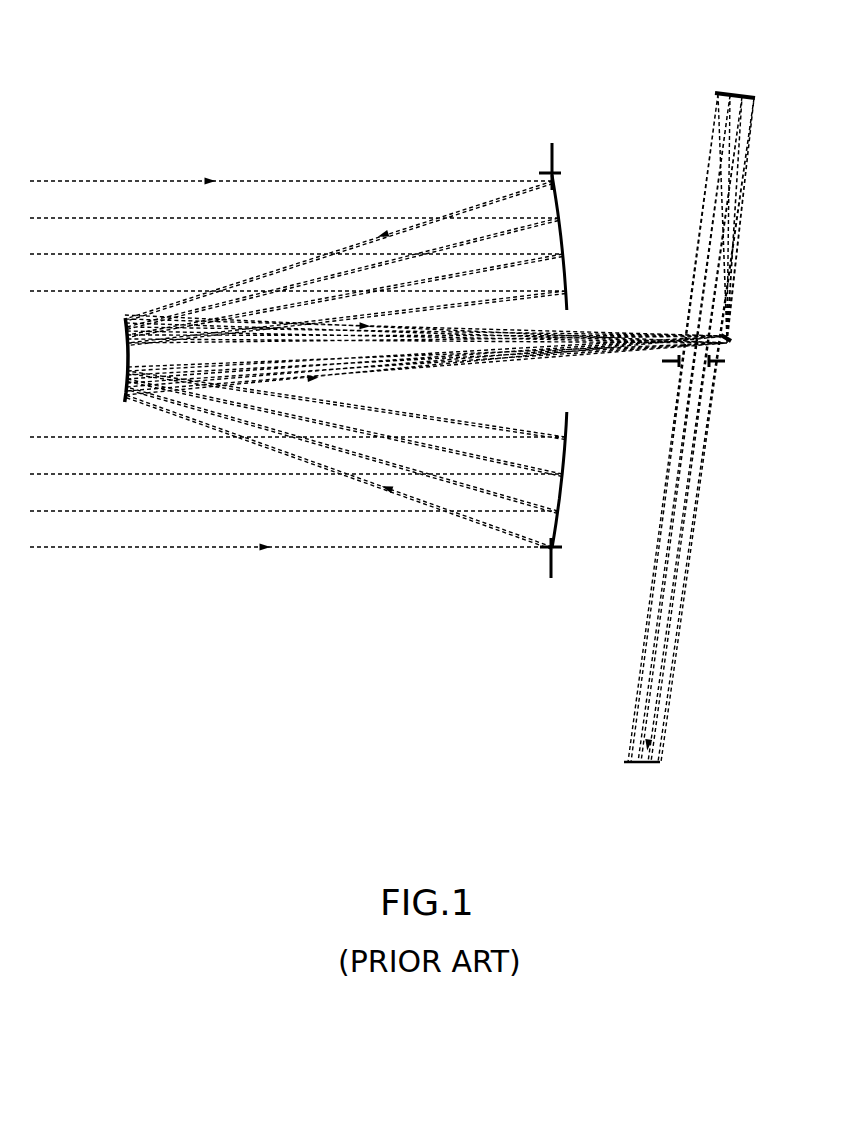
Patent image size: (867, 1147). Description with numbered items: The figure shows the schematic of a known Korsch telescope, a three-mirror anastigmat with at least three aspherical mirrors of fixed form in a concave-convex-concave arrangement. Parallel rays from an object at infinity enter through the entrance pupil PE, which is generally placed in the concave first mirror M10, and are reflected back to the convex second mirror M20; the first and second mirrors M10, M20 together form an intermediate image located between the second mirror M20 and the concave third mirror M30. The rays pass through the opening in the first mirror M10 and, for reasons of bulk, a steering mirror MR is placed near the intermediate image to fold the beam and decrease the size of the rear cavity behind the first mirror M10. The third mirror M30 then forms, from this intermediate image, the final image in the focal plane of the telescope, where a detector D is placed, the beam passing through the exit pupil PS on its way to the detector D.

The first mirror M10 is at (561, 232).
The second mirror M20 is at (122, 355).
The third mirror M30 is at (737, 92).
The entrance pupil PE is at (550, 566).
The exit pupil PS is at (662, 361).
The steering mirror MR is at (731, 338).
The detector D is at (642, 764).